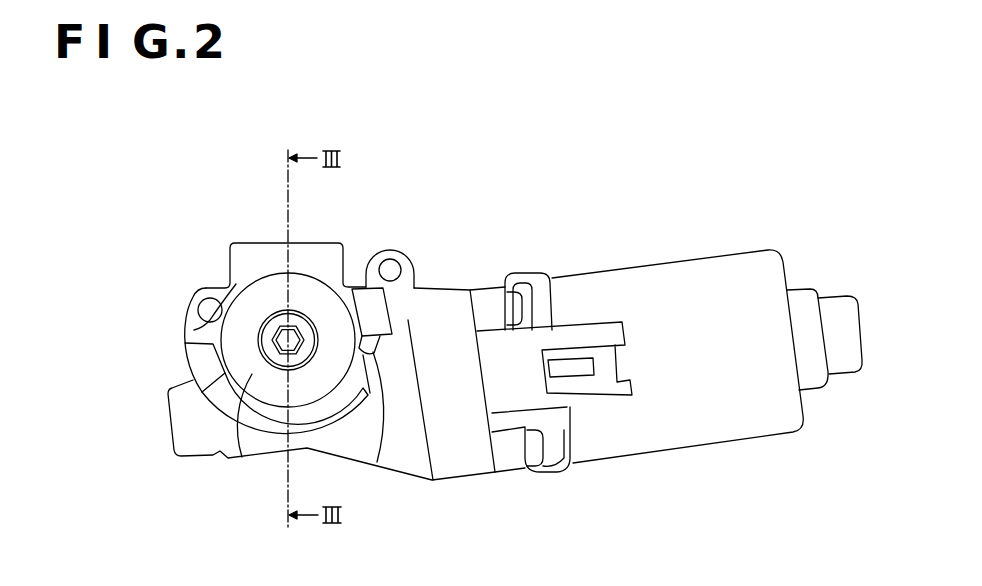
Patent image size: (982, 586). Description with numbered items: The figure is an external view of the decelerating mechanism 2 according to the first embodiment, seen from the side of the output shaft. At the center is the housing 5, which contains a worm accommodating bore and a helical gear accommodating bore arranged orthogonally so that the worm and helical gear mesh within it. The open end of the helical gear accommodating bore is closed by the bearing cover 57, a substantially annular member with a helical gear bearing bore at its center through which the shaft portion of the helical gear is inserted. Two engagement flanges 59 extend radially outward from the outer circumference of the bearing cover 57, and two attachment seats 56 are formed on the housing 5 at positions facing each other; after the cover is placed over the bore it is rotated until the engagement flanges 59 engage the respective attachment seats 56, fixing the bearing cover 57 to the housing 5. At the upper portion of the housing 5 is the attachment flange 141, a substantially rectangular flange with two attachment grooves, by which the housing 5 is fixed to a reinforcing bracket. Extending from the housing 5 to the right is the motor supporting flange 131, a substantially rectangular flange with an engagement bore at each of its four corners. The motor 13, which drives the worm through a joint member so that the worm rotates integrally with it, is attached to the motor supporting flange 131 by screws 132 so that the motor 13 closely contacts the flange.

The decelerating mechanism 2 is at (204, 190).
The housing 5 is at (323, 263).
The motor 13 is at (721, 287).
The attachment seats 56 is at (202, 363).
The bearing cover 57 is at (244, 466).
The engagement flanges 59 is at (207, 330).
The motor supporting flange 131 is at (472, 455).
The screws 132 is at (510, 303).
The attachment flange 141 is at (247, 257).